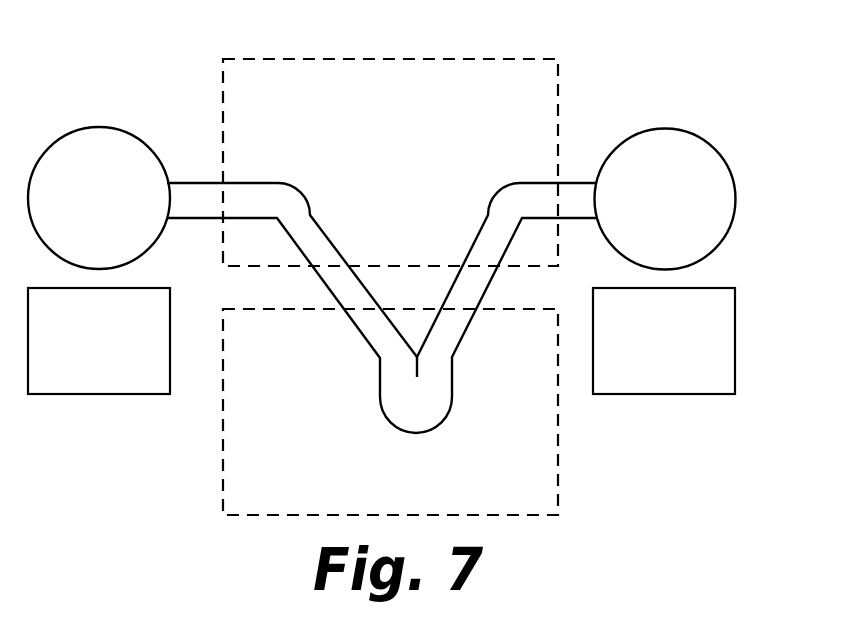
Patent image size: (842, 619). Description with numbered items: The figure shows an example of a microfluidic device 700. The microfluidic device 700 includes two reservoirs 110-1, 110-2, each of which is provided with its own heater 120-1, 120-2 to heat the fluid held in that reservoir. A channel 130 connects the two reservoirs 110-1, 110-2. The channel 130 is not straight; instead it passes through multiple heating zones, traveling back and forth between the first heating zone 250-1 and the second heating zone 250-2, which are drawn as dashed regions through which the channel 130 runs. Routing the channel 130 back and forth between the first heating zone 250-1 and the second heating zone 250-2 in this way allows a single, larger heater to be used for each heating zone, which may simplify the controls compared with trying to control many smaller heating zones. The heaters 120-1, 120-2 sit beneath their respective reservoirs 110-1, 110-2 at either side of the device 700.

The microfluidic device 700 is at (421, 262).
The channel 130 is at (645, 78).
The reservoir 110-1 is at (63, 229).
The reservoir 110-2 is at (629, 229).
The heater 120-1 is at (63, 369).
The heater 120-2 is at (628, 369).
The first heating zone 250-1 is at (425, 148).
The second heating zone 250-2 is at (460, 497).